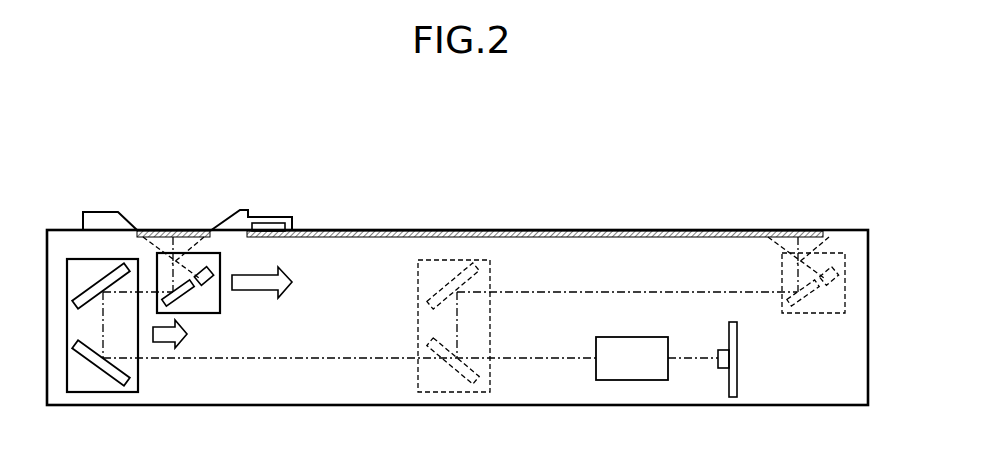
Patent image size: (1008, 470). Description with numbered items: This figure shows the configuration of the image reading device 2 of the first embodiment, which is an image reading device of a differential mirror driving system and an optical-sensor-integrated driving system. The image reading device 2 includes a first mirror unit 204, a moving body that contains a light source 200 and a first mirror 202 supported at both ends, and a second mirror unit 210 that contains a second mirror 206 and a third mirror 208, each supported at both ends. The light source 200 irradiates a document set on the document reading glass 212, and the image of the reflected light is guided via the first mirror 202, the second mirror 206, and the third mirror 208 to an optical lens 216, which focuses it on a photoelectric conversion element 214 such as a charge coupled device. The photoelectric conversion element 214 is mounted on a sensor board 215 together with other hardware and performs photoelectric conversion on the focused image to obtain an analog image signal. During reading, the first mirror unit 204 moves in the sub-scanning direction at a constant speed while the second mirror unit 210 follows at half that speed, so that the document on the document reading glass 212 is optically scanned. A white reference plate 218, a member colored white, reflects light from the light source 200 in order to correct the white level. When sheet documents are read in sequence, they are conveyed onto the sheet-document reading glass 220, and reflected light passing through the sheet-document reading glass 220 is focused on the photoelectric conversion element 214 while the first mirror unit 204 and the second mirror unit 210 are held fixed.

The image reading device 2 is at (799, 168).
The light source 200 is at (215, 282).
The first mirror 202 is at (183, 298).
The first mirror unit 204 is at (188, 253).
The second mirror 206 is at (97, 268).
The third mirror 208 is at (93, 370).
The second mirror unit 210 is at (123, 393).
The document reading glass 212 is at (397, 229).
The photoelectric conversion element 214 is at (722, 369).
The sensor board 215 is at (735, 398).
The optical lens 216 is at (633, 382).
The white reference plate 218 is at (263, 223).
The sheet-document reading glass 220 is at (147, 230).